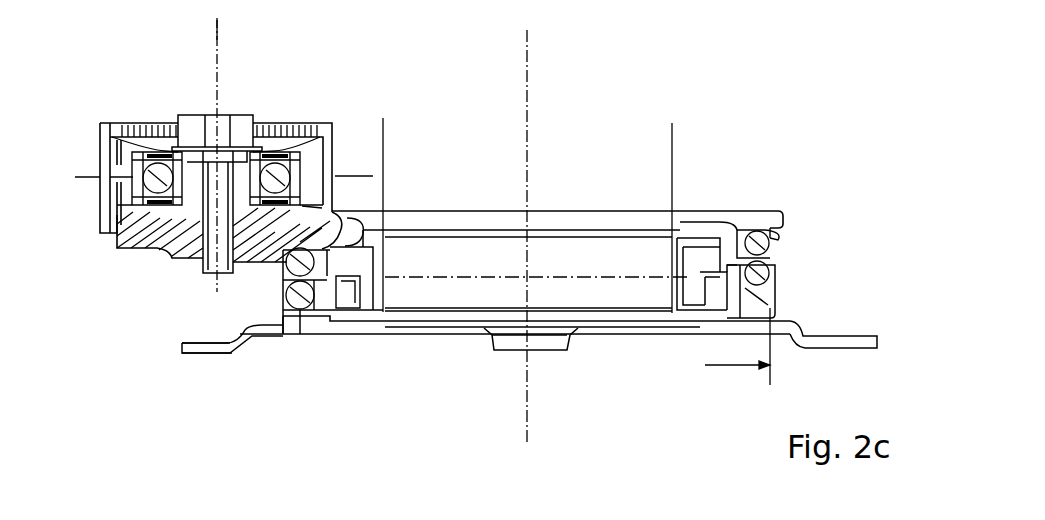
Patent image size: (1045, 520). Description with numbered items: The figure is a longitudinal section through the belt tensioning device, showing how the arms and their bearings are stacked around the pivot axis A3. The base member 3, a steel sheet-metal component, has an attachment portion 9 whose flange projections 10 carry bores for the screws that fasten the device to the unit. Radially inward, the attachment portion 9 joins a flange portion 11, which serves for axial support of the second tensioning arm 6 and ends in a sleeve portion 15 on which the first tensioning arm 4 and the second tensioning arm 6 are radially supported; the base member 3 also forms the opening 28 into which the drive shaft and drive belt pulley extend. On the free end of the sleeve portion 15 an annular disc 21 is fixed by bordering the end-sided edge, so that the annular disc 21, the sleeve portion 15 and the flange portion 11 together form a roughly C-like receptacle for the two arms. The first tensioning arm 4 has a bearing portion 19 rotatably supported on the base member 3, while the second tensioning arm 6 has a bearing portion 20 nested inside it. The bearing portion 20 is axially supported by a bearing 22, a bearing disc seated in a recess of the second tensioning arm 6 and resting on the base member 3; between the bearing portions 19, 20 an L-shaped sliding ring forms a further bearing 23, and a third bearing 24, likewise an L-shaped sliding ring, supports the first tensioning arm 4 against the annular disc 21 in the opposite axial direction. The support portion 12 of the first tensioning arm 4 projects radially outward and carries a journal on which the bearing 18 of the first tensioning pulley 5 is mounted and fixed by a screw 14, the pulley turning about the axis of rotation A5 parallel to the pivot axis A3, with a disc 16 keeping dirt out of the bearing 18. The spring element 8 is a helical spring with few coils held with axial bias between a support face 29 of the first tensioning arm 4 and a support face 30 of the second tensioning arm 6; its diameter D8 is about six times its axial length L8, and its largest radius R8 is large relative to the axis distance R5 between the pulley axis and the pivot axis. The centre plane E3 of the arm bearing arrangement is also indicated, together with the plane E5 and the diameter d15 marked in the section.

The base member 3 is at (667, 322).
The first tensioning arm 4 is at (773, 211).
The first tensioning pulley 5 is at (100, 150).
The second tensioning arm 6 is at (775, 303).
The spring element 8 is at (770, 243).
The attachment portion 9 is at (505, 353).
The flange projections 10 is at (208, 356).
The flange portion 11 is at (707, 312).
The support portion 12 is at (180, 250).
The screw 14 is at (232, 122).
The sleeve portion 15 is at (680, 290).
The disc 16 is at (287, 128).
The bearing 18 is at (320, 133).
The bearing portion 19 is at (690, 240).
The bearing portion 20 is at (720, 280).
The annular disc 21 is at (703, 247).
The bearing 22 is at (345, 325).
The bearing 23 is at (357, 289).
The third bearing 24 is at (377, 255).
The opening 28 is at (597, 252).
The support face 29 is at (775, 233).
The support face 30 is at (290, 300).
The pivot axis A3 is at (527, 435).
The axis of rotation A5 is at (208, 130).
The centre plane E3 is at (627, 277).
The plane E5 is at (400, 119).
The axis distance R5 is at (284, 29).
The largest radius R8 is at (285, 418).
The diameter D8 is at (285, 345).
The axial length L8 is at (549, 232).
The diameter d15 is at (383, 125).